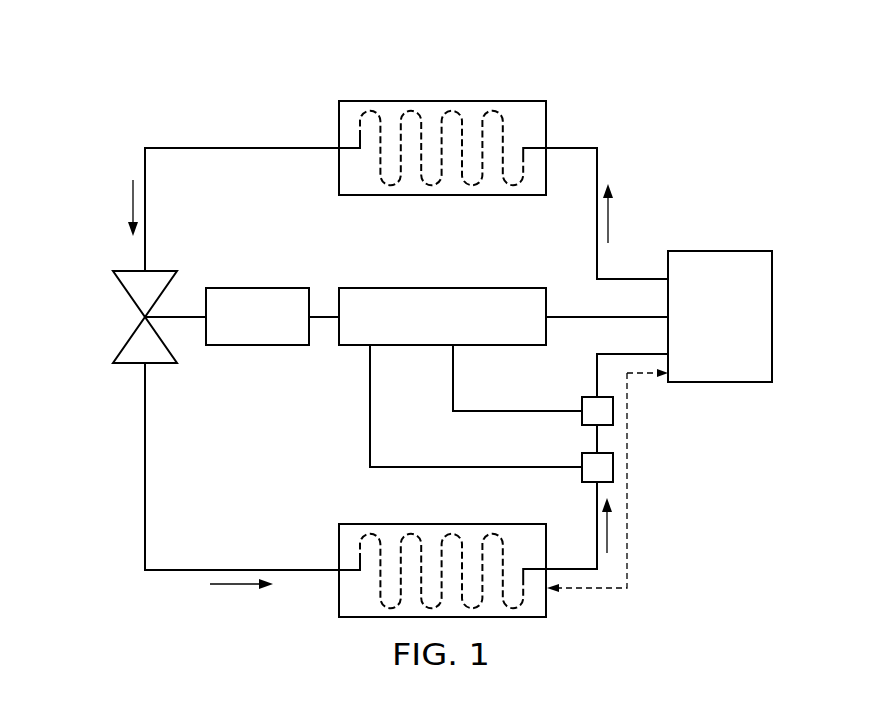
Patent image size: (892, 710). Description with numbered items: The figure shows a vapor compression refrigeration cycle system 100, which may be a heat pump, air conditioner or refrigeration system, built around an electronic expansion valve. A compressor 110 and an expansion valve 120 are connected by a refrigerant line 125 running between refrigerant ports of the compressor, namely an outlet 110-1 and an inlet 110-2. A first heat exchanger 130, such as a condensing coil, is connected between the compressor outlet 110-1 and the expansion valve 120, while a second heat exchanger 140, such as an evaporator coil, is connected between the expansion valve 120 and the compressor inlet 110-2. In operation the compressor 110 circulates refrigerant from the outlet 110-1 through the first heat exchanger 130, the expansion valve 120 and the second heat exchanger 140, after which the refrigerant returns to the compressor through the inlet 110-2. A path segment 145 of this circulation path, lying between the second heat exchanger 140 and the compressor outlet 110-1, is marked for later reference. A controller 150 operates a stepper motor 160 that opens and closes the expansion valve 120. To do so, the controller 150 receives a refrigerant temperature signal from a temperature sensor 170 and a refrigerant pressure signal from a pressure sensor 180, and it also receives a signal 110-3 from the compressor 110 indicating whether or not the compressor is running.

The VCRC system 100 is at (241, 67).
The compressor 110 is at (720, 251).
The compressor outlet 110-1 is at (690, 279).
The compressor inlet 110-2 is at (690, 354).
The compressor operating signal 110-3 is at (690, 316).
The expansion valve 120 is at (131, 296).
The refrigerant line 125 is at (241, 148).
The first heat exchanger 130 is at (440, 101).
The second heat exchanger 140 is at (339, 543).
The path segment 145 is at (628, 540).
The controller 150 is at (442, 288).
The stepper motor 160 is at (258, 288).
The temperature sensor 170 is at (580, 418).
The pressure sensor 180 is at (580, 475).